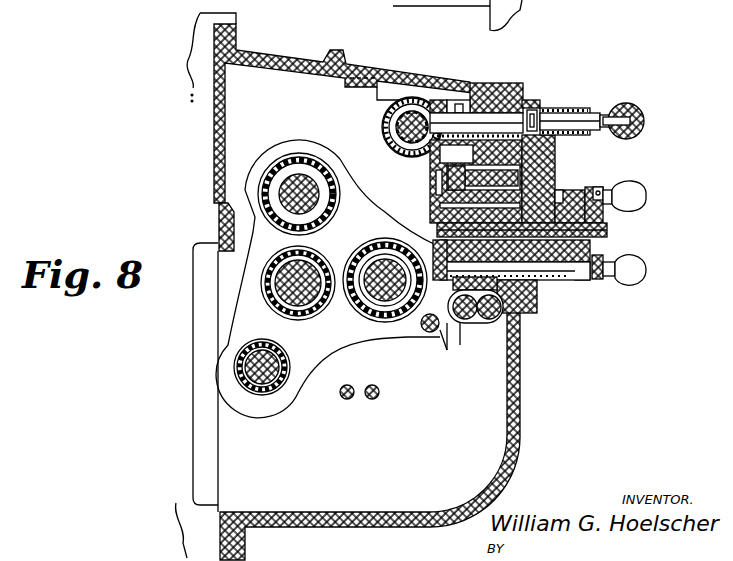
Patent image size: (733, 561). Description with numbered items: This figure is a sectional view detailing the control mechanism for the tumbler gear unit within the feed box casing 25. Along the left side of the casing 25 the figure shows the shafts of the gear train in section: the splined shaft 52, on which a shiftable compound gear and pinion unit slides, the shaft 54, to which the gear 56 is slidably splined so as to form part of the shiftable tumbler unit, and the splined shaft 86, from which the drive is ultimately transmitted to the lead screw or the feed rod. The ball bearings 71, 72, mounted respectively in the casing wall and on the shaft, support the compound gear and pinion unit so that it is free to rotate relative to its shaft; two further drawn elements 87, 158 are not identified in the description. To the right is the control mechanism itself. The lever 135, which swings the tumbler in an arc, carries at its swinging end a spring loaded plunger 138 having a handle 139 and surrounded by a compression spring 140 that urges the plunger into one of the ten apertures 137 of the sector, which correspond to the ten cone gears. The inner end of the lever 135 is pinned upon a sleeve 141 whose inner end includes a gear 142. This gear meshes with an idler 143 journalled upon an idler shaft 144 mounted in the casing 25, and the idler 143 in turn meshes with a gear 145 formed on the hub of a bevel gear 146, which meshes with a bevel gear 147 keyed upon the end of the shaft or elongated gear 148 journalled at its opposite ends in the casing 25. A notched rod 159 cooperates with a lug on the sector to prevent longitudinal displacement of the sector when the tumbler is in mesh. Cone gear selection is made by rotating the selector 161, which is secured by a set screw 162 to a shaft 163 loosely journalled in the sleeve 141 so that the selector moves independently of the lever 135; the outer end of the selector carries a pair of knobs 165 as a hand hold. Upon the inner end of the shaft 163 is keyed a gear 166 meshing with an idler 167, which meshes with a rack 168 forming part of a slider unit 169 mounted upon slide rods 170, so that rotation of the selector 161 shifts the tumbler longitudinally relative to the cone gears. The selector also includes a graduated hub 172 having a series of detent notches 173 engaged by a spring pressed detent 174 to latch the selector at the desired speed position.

The casing 25 is at (527, 406).
The splined shaft 52 is at (309, 303).
The shaft 54 is at (387, 300).
The gear 56 is at (300, 175).
The ball bearing 71 is at (318, 188).
The ball bearing 72 is at (323, 214).
The splined shaft 86 is at (273, 390).
The bearing race 87 is at (270, 383).
The lever 135 is at (558, 140).
The apertures 137 is at (530, 110).
The spring loaded plunger 138 is at (545, 110).
The handle 139 is at (628, 105).
The compression spring 140 is at (580, 110).
The sleeve 141 is at (562, 195).
The gear 142 is at (455, 193).
The idler 143 is at (440, 182).
The idler shaft 144 is at (372, 399).
The gear 145 is at (480, 85).
The bevel gear 146 is at (441, 100).
The bevel gear 147 is at (412, 97).
The shaft or elongated gear 148 is at (398, 118).
The bearing ring 158 is at (392, 134).
The notched rod 159 is at (445, 340).
The selector 161 is at (618, 203).
The set screw 162 is at (603, 215).
The shaft 163 is at (560, 232).
The knobs 165 is at (632, 185).
The gear 166 is at (440, 212).
The idler 167 is at (430, 333).
The rack 168 is at (452, 330).
The slider unit 169 is at (475, 323).
The slide rods 170 is at (510, 313).
The hub 172 is at (575, 272).
The detent notches 173 is at (555, 278).
The spring pressed detent 174 is at (540, 283).